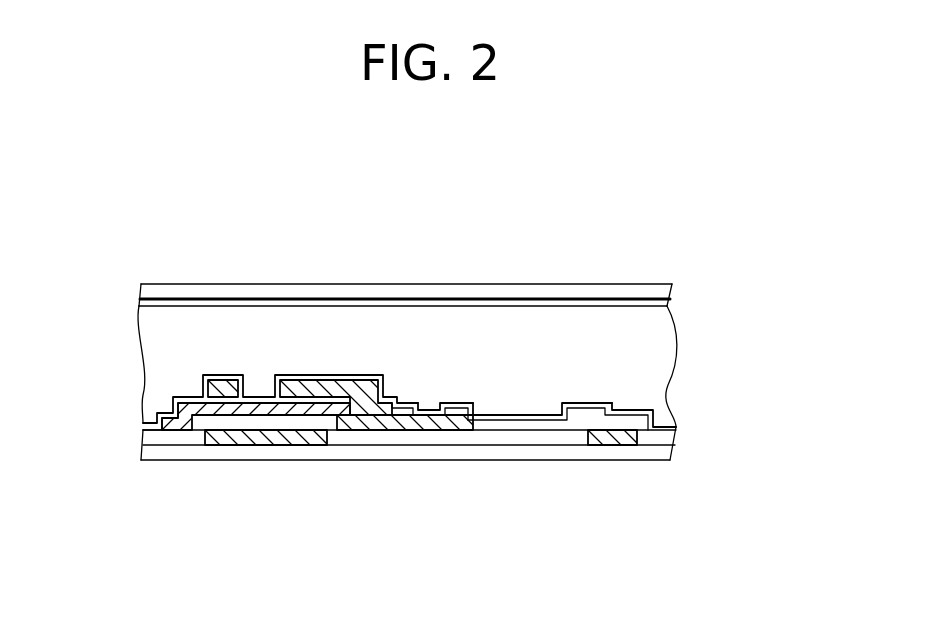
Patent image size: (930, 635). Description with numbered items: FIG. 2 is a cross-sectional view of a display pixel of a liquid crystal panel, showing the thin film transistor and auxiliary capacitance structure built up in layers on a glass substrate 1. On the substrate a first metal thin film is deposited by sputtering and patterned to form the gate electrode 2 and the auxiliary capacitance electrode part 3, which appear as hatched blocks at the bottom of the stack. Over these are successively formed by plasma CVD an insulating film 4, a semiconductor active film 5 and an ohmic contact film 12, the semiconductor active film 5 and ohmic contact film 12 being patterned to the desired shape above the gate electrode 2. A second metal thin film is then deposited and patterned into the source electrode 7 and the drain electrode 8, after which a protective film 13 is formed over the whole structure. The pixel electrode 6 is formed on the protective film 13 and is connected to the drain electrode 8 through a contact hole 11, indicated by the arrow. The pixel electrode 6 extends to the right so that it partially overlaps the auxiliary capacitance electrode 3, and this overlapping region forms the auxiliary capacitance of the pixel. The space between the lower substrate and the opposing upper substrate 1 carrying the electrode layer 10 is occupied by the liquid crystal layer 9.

The substrate 1 is at (162, 293).
The gate electrode 2 is at (242, 438).
The auxiliary capacitance electrode part 3 is at (607, 440).
The insulating film 4 is at (538, 440).
The semiconductor active film 5 is at (272, 410).
The pixel electrode 6 is at (513, 420).
The source electrode 7 is at (212, 394).
The drain electrode 8 is at (328, 387).
The liquid crystal layer 9 is at (618, 333).
The counter electrode 10 is at (552, 303).
The contact hole 11 is at (427, 400).
The ohmic contact film 12 is at (223, 398).
The protective film 13 is at (638, 413).